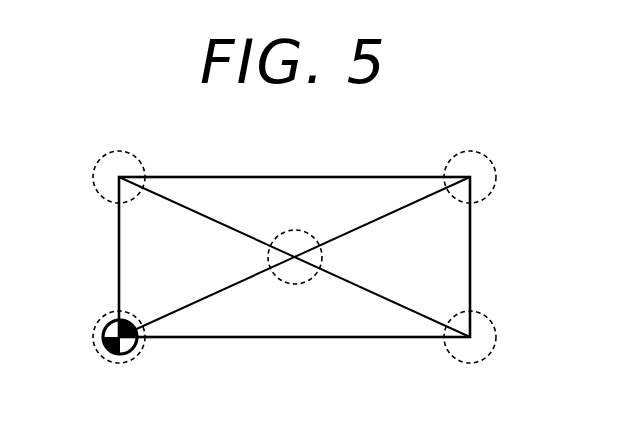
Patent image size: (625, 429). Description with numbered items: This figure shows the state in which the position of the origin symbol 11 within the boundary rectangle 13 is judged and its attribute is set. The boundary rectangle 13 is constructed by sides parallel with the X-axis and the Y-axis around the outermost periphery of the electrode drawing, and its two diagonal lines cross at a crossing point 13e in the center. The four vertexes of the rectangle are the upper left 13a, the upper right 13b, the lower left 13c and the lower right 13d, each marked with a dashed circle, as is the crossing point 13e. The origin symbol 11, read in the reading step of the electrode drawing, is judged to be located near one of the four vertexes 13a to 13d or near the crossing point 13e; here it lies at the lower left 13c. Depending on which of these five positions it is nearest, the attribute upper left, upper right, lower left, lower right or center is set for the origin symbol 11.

The boundary rectangle 13 is at (364, 177).
The upper left vertex 13a is at (96, 163).
The upper right vertex 13b is at (495, 161).
The lower left vertex 13c is at (96, 353).
The lower right vertex 13d is at (486, 360).
The crossing point of diagonal lines 13e is at (307, 284).
The origin symbol 11 is at (134, 354).